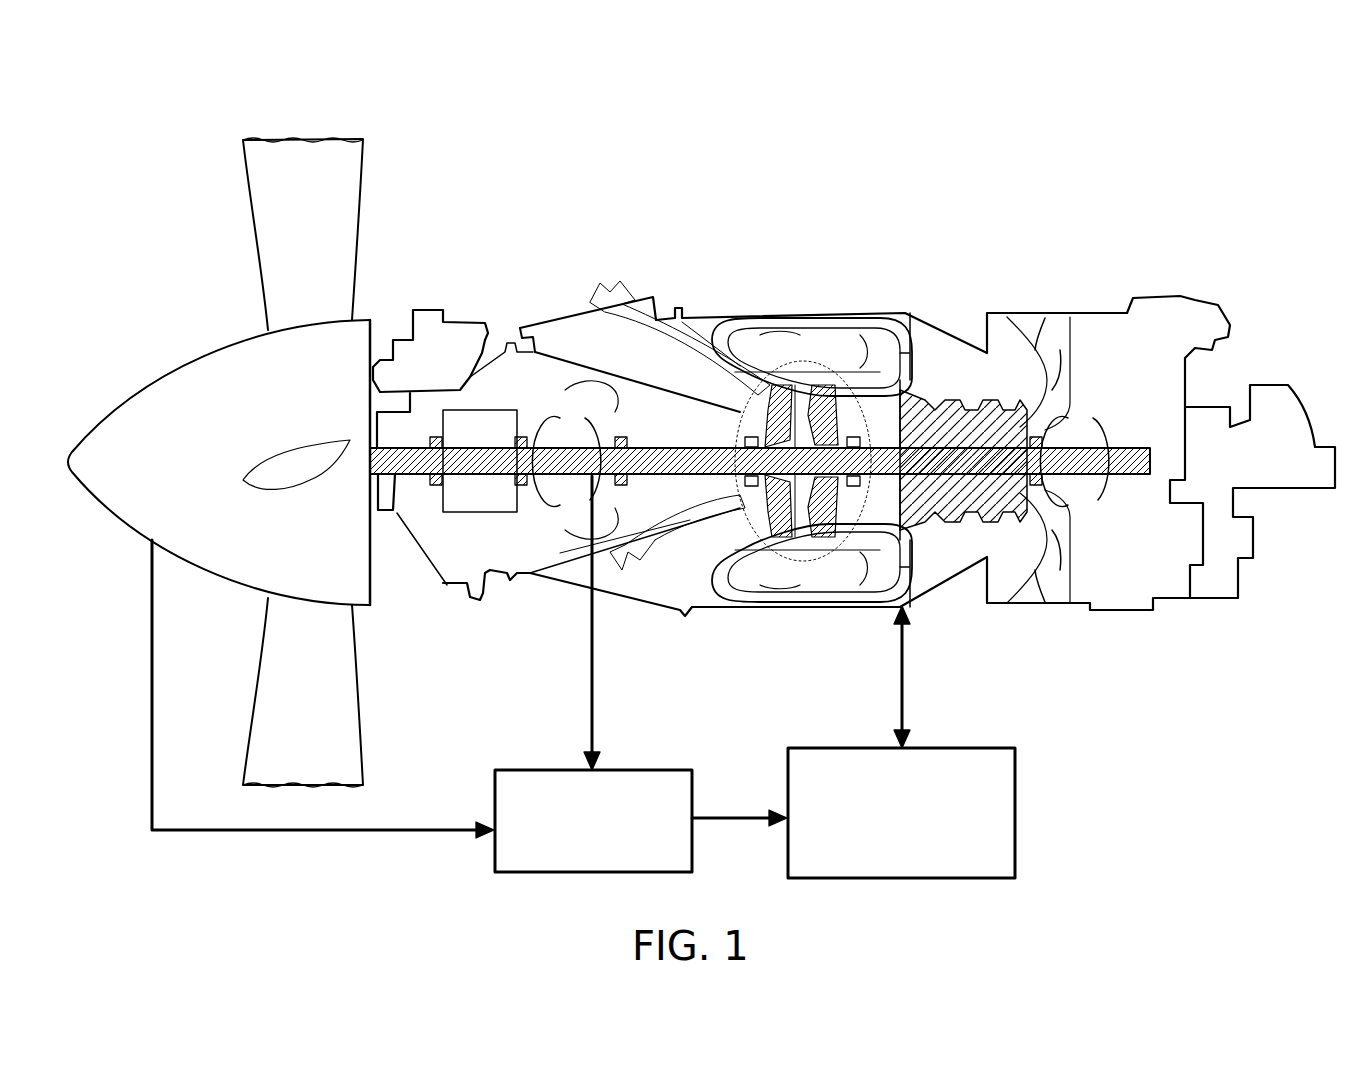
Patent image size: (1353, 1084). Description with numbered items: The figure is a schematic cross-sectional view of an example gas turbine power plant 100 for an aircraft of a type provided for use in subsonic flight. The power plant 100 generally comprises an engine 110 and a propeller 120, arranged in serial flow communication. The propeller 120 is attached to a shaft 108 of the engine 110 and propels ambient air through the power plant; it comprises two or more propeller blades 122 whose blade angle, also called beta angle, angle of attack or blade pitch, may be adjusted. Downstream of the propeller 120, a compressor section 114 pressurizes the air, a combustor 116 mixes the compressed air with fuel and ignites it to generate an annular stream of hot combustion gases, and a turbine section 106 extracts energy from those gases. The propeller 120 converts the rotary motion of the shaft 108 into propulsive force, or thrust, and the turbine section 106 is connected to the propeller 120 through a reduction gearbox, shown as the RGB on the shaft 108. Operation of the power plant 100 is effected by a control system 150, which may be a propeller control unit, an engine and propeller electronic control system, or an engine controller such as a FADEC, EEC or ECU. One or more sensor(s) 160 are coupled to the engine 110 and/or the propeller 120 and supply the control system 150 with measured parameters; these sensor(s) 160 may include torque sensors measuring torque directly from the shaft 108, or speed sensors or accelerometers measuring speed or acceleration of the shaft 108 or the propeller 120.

The power plant 100 is at (982, 76).
The turbine section 106 is at (736, 487).
The shaft 108 is at (395, 467).
The engine 110 is at (1232, 272).
The compressor section 114 is at (942, 545).
The combustor 116 is at (828, 352).
The propeller 120 is at (370, 124).
The propeller blades 122 is at (343, 190).
The control system 150 is at (877, 865).
The sensor(s) 160 is at (568, 855).